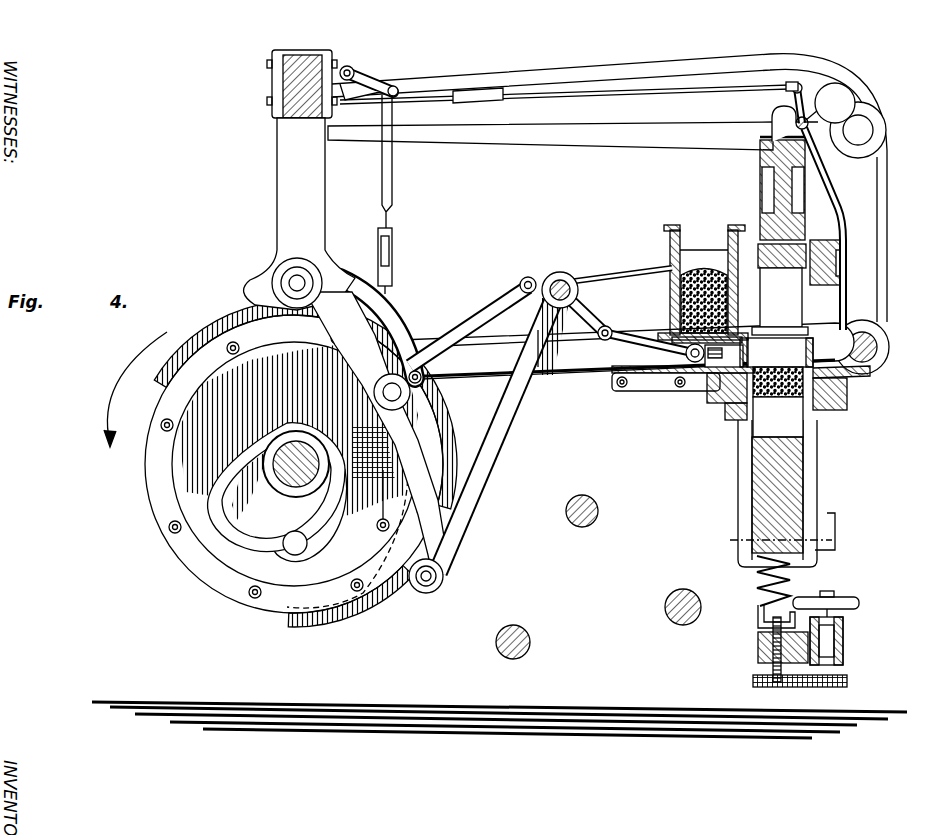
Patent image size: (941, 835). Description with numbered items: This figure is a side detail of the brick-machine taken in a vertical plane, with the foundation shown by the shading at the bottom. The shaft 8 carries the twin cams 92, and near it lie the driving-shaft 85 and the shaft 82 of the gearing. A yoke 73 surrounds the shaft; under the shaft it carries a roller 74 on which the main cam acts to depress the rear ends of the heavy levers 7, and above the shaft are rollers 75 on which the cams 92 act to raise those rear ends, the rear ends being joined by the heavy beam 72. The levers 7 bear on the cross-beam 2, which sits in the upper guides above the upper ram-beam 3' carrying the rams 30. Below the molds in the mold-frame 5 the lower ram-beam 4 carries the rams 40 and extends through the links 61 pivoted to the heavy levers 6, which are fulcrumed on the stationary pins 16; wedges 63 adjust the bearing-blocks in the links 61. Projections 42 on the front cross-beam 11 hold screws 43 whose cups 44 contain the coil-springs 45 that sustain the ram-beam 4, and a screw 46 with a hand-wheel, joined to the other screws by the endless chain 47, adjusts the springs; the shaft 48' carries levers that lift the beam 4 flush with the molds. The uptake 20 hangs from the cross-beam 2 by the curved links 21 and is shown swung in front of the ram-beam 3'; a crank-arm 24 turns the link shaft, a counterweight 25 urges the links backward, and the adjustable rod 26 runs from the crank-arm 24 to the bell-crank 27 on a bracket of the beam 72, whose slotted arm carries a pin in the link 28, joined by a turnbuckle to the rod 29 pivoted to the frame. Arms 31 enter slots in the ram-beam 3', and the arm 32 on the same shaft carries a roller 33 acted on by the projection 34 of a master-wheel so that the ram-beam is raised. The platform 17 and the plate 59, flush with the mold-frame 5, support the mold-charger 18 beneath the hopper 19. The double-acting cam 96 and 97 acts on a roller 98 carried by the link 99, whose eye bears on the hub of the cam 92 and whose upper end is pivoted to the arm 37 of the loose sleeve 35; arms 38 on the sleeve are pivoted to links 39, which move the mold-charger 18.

The cross-beam 2 is at (760, 193).
The stop block 3' is at (782, 269).
The lower ram-beam 4 is at (752, 456).
The mold-frame 5 is at (847, 410).
The heavy levers 6 is at (822, 318).
The heavy lever 7 is at (607, 188).
The shaft 8 is at (296, 464).
The front cross-beam 11 is at (843, 645).
The stationary pins 16 is at (878, 347).
The platform 17 is at (656, 390).
The mold-charger 18 is at (660, 356).
The hopper 19 is at (704, 240).
The uptake 20 is at (842, 263).
The curved links 21 is at (842, 197).
The crank-arm 24 is at (790, 100).
The counterweight 25 is at (850, 120).
The adjustable rod 26 is at (580, 92).
The bell-crank 27 is at (362, 80).
The link 28 is at (393, 182).
The rod 29 is at (380, 490).
The rams 30 is at (780, 301).
The arms 31 is at (628, 275).
The arm 32 is at (490, 442).
The roller 33 is at (443, 578).
The projection 34 is at (362, 614).
The loose sleeve 35 is at (562, 272).
The arm 37 is at (524, 276).
The arms 38 is at (592, 313).
The links 39 is at (630, 346).
The rams 40 is at (778, 417).
The projections 42 is at (758, 647).
The screws 43 is at (773, 668).
The cups 44 is at (758, 617).
The coil-springs 45 is at (757, 582).
The screw 46 is at (838, 612).
The endless chain 47 is at (800, 687).
The shaft 48' is at (513, 630).
The plate 59 is at (870, 376).
The links 61 is at (817, 466).
The wedges 63 is at (835, 536).
The heavy beam 72 is at (300, 50).
The lever 73 is at (367, 572).
The roller 74 is at (307, 550).
The rollers 75 is at (304, 262).
The shaft 82 is at (583, 495).
The driving-shaft 85 is at (676, 590).
The twin cams 92 is at (238, 316).
The double-acting cam part 96 is at (147, 489).
The double-acting cam part 97 is at (398, 322).
The roller 98 is at (400, 405).
The link 99 is at (480, 310).